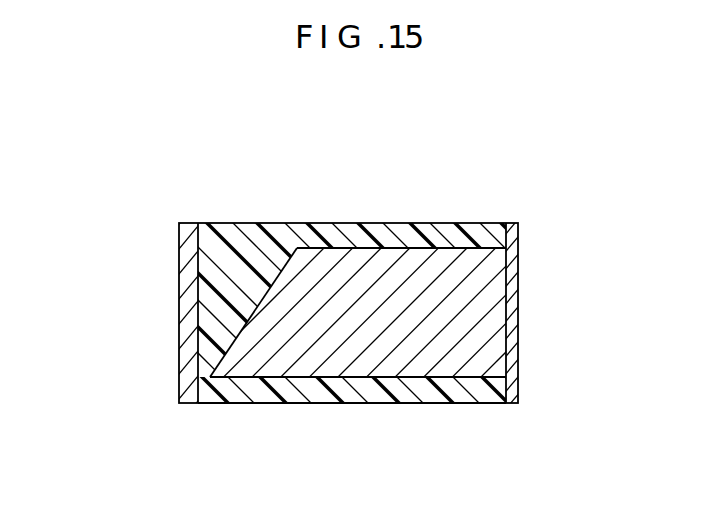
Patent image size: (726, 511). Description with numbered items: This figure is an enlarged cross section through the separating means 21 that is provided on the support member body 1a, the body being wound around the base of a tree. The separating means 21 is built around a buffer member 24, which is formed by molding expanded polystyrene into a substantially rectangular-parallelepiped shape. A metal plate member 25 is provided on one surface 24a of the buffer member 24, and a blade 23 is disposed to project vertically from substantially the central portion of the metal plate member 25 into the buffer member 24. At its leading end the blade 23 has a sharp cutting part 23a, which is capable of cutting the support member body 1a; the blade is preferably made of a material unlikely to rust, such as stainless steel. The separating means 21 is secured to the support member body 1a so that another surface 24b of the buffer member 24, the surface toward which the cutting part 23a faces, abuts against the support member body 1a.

The support member body 1a is at (188, 397).
The separating means 21 is at (317, 405).
The blade 23 is at (450, 372).
The cutting part 23a is at (250, 321).
The buffer member 24 is at (328, 227).
The surface of the buffer member 24a is at (515, 229).
The another surface of the buffer member 24b is at (197, 283).
The metal plate member 25 is at (512, 313).